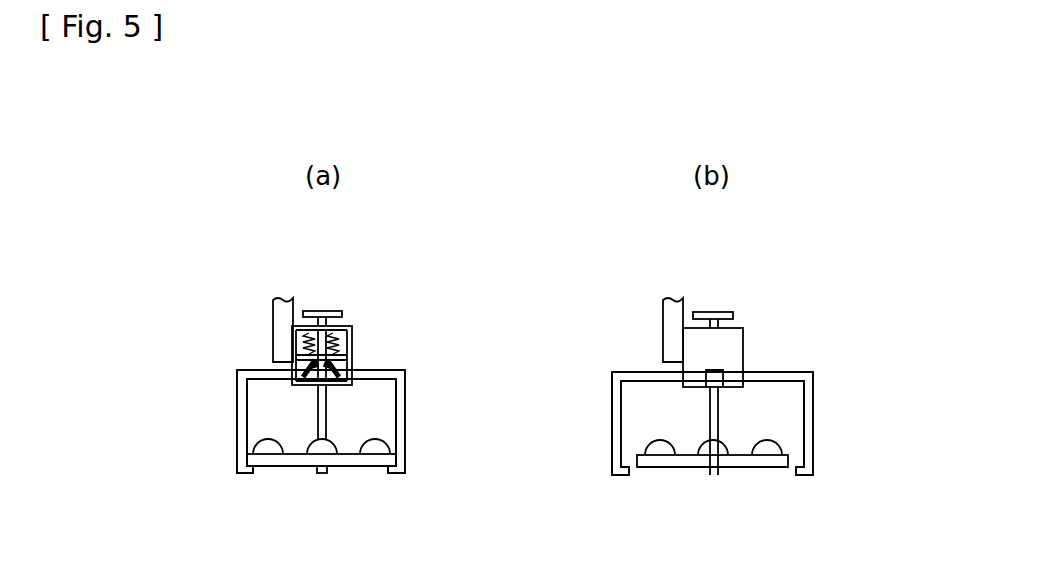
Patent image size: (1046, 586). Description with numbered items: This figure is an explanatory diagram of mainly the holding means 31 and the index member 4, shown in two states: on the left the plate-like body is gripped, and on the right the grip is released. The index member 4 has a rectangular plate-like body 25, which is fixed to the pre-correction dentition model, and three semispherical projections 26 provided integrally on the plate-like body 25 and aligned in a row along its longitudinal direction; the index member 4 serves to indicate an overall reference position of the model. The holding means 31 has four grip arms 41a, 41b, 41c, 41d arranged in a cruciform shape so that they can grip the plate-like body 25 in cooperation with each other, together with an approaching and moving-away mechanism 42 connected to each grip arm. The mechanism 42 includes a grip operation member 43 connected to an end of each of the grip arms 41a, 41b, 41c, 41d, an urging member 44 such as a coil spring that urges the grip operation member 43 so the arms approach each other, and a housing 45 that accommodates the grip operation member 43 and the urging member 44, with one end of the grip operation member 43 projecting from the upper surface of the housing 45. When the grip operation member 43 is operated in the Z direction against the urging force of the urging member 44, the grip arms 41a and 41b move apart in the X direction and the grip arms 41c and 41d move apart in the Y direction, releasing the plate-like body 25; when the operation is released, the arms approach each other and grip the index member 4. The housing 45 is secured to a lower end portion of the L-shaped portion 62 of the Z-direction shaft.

The index member 4 is at (297, 468).
The plate-like body 25 is at (358, 458).
The projections 26 is at (262, 450).
The holding means 31 is at (233, 368).
The grip arm 41a is at (714, 410).
The grip arm 41b is at (327, 415).
The grip arm 41c is at (405, 417).
The grip arm 41d is at (241, 417).
The approaching and moving-away mechanism 42 is at (345, 309).
The grip operation member 43 is at (318, 310).
The urging member 44 is at (336, 340).
The housing 45 is at (350, 363).
The L-shaped portion 62 is at (277, 329).